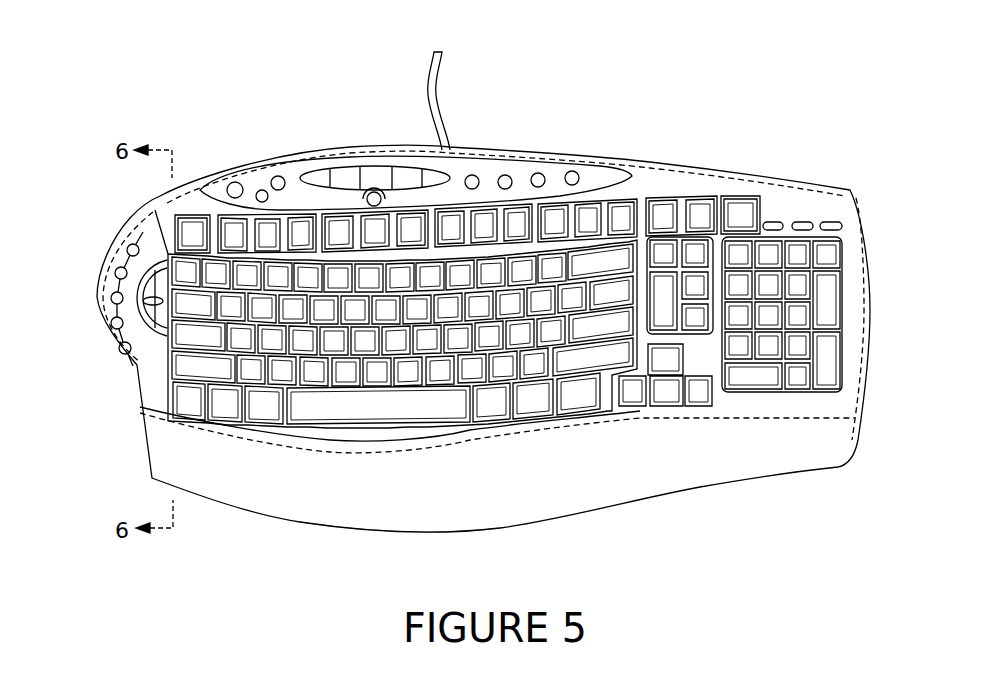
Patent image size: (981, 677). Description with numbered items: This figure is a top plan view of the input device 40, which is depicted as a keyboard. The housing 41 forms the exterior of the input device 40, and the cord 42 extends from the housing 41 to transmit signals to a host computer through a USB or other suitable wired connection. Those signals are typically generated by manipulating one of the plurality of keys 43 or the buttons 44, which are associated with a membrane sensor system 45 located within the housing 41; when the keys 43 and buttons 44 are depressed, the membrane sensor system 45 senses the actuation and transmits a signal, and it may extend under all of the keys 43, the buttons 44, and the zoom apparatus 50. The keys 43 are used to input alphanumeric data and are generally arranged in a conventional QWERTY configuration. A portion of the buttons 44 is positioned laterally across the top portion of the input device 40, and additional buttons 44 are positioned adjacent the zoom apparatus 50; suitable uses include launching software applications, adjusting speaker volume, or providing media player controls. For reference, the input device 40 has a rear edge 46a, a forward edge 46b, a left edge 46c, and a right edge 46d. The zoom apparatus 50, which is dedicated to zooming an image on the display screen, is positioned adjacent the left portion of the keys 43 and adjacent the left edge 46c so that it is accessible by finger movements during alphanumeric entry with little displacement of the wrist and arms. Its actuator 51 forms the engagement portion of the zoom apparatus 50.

The input device 40 is at (373, 114).
The housing 41 is at (708, 468).
The cord 42 is at (447, 110).
The keys 43 is at (333, 340).
The buttons 44 is at (235, 182).
The membrane sensor system 45 is at (120, 366).
The rear edge 46a is at (326, 151).
The forward edge 46b is at (400, 536).
The left edge 46c is at (96, 300).
The right edge 46d is at (870, 309).
The zoom apparatus 50 is at (146, 252).
The actuator 51 is at (150, 340).